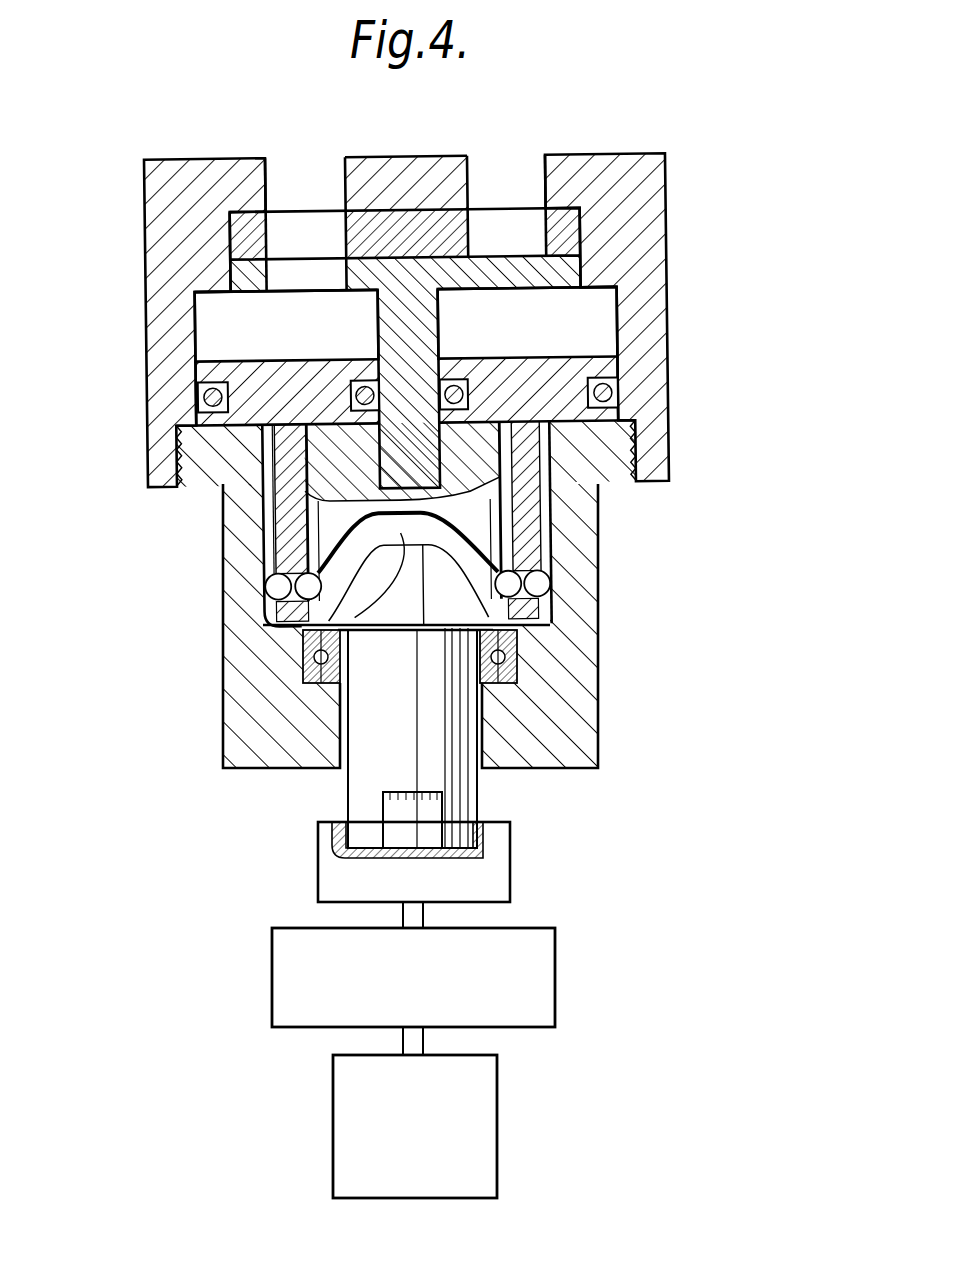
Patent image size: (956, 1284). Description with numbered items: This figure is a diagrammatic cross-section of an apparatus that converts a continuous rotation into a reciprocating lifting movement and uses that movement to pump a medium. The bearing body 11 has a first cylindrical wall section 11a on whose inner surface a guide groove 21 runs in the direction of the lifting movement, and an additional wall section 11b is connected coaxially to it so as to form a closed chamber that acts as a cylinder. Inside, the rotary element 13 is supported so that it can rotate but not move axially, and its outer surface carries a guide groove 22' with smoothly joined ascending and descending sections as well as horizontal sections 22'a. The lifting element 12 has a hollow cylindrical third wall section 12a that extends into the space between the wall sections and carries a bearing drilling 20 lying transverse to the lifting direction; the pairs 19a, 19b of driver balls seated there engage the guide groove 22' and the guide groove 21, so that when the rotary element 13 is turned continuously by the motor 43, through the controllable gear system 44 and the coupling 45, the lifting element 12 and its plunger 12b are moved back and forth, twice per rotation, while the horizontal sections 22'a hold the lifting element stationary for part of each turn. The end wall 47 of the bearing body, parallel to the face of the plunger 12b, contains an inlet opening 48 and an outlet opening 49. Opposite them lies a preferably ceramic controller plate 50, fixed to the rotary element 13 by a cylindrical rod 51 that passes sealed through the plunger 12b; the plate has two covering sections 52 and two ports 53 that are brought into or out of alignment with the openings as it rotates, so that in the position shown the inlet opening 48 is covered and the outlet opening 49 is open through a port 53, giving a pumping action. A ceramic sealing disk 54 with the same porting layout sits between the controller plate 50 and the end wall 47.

The bearing body 11 is at (145, 183).
The first cylindrical wall section 11a is at (567, 742).
The additional wall section 11b is at (643, 172).
The lifting element 12 is at (258, 357).
The third wall section 12a is at (520, 522).
The plunger 12b is at (545, 372).
The rotary element 13 is at (366, 791).
The first pair of driver balls 19a is at (264, 583).
The second pair of driver balls 19b is at (557, 582).
The bearing drilling 20 is at (298, 622).
The guide groove 21 is at (262, 512).
The horizontal sections 22'a is at (234, 676).
The guide groove 22' is at (576, 656).
The motor 43 is at (478, 1140).
The controllable gear system 44 is at (540, 985).
The coupling 45 is at (495, 869).
The end wall 47 is at (399, 180).
The inlet opening 48 is at (501, 180).
The outlet opening 49 is at (299, 180).
The controller plate 50 is at (590, 262).
The cylindrical rod 51 is at (410, 323).
The covering sections 52 is at (560, 310).
The ports 53 is at (293, 286).
The sealing disk 54 is at (573, 228).